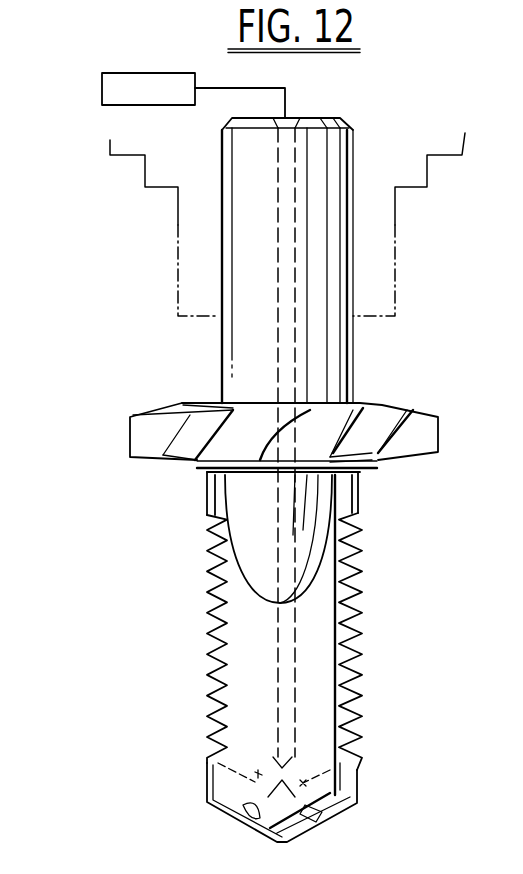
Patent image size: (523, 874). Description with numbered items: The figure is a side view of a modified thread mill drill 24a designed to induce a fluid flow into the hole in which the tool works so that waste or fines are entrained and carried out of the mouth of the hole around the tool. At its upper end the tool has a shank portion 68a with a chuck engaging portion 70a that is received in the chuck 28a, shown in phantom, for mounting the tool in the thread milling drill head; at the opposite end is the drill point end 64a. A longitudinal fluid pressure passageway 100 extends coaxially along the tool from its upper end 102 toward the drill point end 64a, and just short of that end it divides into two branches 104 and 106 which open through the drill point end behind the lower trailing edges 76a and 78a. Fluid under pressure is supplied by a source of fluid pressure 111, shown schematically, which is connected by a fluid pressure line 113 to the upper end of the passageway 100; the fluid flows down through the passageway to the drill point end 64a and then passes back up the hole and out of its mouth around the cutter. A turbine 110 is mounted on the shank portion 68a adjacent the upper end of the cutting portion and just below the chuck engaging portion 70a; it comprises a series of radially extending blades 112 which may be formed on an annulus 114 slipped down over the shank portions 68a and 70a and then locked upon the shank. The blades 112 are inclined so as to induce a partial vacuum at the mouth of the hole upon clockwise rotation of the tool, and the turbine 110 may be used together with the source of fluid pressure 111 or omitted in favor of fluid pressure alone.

The thread mill drill 24a is at (251, 479).
The chuck 28a is at (176, 250).
The drill point end 64a is at (297, 837).
The shank portion 68a is at (352, 384).
The chuck engaging portion 70a is at (350, 248).
The lower trailing edge 76a is at (343, 818).
The lower trailing edge 78a is at (207, 797).
The fluid pressure passageway 100 is at (296, 172).
The upper end 102 is at (326, 118).
The branch 104 is at (240, 772).
The branch 106 is at (370, 755).
The turbine 110 is at (130, 418).
The source of fluid pressure 111 is at (100, 88).
The blades 112 is at (180, 452).
The fluid pressure line 113 is at (262, 87).
The annulus 114 is at (200, 470).